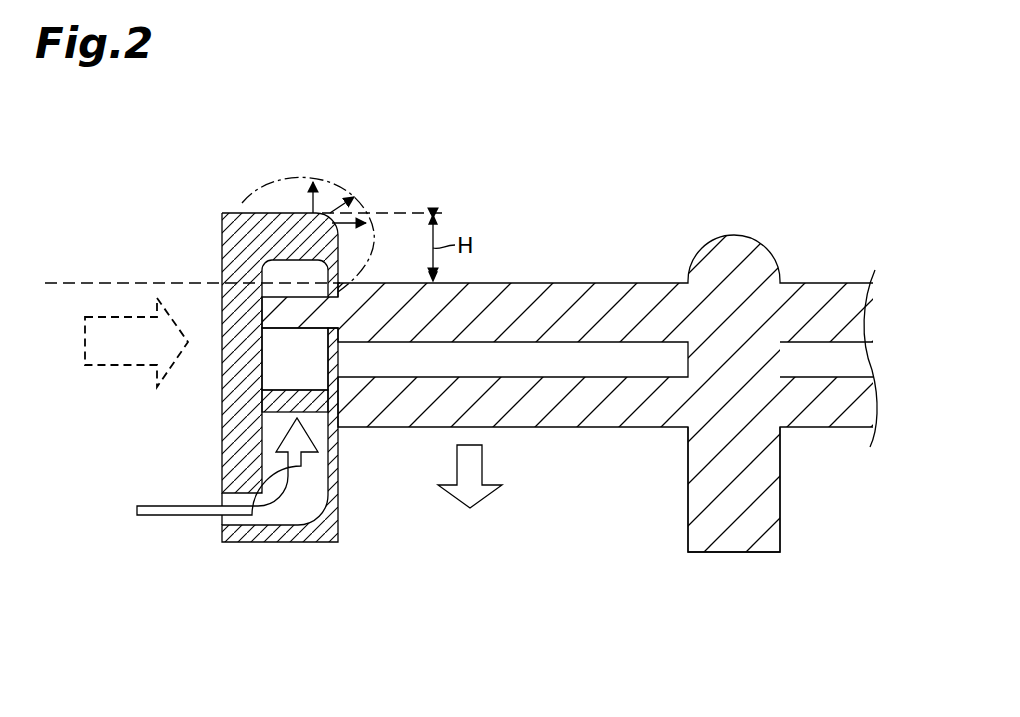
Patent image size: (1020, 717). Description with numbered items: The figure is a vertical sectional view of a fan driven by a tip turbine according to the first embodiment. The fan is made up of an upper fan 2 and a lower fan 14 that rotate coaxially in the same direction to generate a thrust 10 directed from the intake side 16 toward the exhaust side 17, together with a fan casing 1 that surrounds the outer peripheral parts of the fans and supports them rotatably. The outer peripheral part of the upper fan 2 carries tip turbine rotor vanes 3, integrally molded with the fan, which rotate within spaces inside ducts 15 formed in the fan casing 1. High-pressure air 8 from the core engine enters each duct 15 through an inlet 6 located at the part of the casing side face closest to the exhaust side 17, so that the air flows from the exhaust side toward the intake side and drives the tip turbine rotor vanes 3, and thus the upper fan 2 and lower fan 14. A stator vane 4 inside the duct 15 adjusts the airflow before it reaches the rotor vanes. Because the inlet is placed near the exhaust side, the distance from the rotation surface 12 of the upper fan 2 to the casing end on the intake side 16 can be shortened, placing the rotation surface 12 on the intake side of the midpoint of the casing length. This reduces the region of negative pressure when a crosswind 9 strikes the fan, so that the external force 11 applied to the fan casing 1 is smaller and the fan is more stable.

The fan casing 1 is at (222, 233).
The upper fan 2 is at (517, 298).
The tip turbine rotor vane 3 is at (283, 295).
The stator vane 4 is at (268, 399).
The inlet 6 is at (220, 517).
The high-pressure air 8 is at (258, 520).
The crosswind 9 is at (85, 335).
The thrust 10 is at (455, 502).
The external force 11 is at (345, 218).
The rotation surface 12 is at (88, 281).
The lower fan 14 is at (565, 410).
The duct 15 is at (277, 365).
The intake side 16 is at (650, 180).
The exhaust side 17 is at (675, 572).